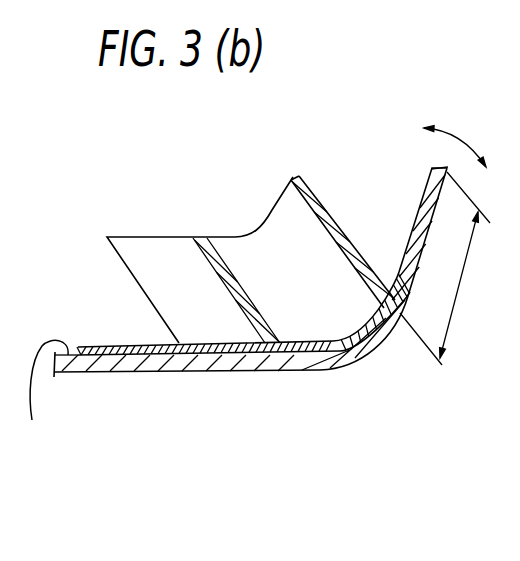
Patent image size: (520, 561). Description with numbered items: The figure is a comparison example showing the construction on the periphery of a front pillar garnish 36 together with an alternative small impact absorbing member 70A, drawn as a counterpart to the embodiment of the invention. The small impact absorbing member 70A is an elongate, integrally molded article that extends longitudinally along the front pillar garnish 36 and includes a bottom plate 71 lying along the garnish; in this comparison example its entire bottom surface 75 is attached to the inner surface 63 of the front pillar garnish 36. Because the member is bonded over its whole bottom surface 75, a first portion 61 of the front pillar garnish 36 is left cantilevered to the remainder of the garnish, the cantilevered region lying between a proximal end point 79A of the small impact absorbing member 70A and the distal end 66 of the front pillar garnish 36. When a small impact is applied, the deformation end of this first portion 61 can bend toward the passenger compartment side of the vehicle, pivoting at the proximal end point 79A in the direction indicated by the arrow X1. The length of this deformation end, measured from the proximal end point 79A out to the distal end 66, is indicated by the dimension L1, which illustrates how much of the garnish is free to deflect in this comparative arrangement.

The small impact absorbing member 70A is at (248, 228).
The proximal end point 79A is at (381, 302).
The bottom plate 71 is at (127, 348).
The front pillar garnish 36 is at (109, 376).
The bottom surface 75 is at (200, 358).
The inner surface 63 is at (42, 395).
The first portion 61 is at (416, 233).
The distal end 66 is at (436, 166).
The arrow X1 is at (455, 140).
The length of the deformation end L1 is at (445, 268).